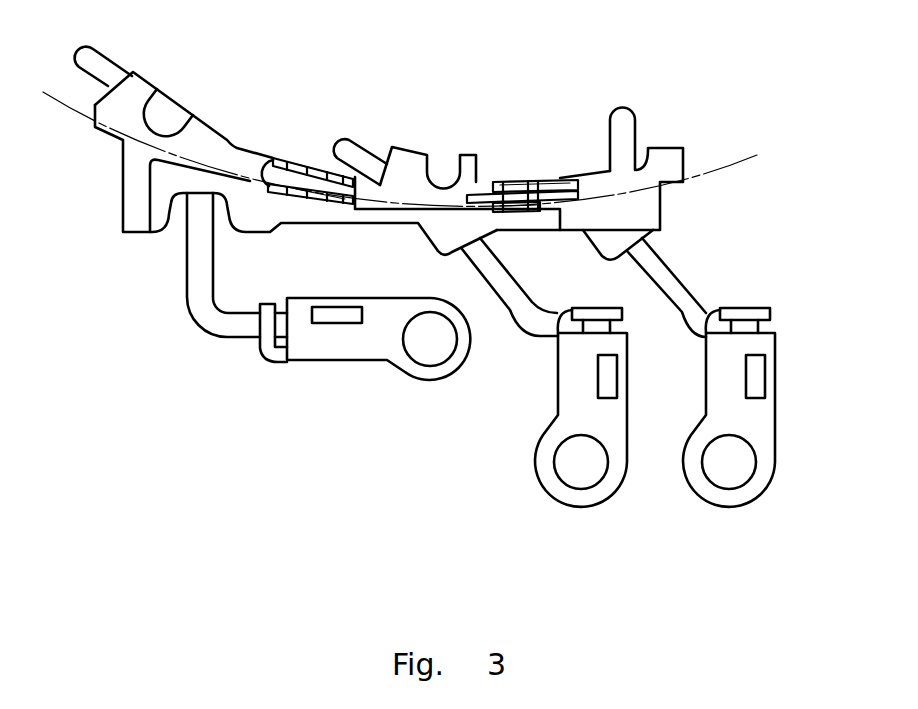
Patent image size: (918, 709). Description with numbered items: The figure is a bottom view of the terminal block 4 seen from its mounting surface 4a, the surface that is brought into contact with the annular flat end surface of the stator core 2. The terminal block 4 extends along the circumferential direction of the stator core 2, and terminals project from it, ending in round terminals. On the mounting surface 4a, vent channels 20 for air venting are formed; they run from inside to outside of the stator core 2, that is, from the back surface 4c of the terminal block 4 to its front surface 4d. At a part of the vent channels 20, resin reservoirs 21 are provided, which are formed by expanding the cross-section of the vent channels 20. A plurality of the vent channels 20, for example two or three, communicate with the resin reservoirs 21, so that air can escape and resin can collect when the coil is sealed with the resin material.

The stator core 2 is at (733, 160).
The terminal block 4 is at (455, 113).
The mounting surface 4a is at (614, 190).
The back surface 4c is at (233, 142).
The front surface 4d is at (304, 225).
The vent channels 20 is at (276, 160).
The resin reservoirs 21 is at (275, 172).